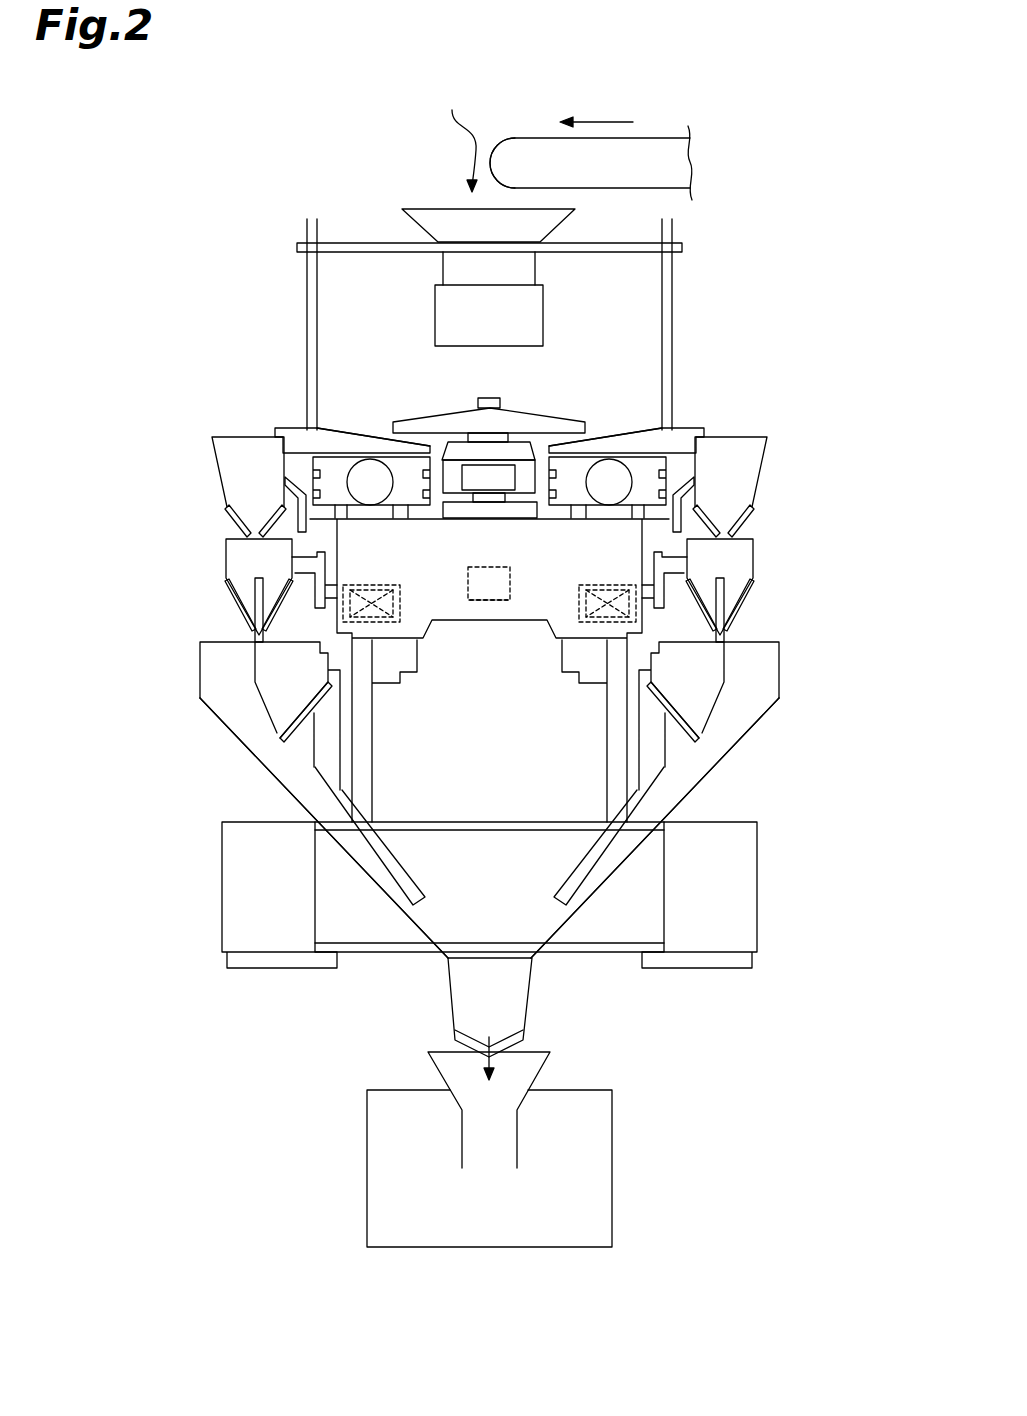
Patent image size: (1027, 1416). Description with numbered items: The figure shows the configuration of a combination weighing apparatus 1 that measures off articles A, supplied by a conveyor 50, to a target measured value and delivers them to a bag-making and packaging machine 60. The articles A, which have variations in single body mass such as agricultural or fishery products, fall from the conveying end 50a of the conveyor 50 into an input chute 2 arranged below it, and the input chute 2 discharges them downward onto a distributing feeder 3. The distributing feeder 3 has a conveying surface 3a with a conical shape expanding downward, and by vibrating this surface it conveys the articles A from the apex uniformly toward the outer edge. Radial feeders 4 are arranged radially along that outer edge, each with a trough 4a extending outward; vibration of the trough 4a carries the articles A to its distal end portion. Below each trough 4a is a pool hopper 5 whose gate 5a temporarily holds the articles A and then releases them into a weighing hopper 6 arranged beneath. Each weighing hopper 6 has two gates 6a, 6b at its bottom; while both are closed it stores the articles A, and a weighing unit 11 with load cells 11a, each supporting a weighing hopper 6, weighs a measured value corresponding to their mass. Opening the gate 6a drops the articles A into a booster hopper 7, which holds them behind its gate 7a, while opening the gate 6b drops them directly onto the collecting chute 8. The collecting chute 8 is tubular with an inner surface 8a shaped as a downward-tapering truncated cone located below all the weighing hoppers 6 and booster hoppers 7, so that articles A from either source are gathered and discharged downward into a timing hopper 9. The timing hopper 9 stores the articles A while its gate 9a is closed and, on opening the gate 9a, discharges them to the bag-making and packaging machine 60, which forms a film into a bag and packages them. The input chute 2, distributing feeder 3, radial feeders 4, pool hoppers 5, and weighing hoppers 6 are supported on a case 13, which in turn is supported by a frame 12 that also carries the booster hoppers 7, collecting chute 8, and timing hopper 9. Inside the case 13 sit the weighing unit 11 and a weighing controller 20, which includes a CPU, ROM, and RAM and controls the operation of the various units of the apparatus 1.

The combination weighing apparatus 1 is at (246, 118).
The input chute 2 is at (434, 214).
The distributing feeder 3 is at (540, 420).
The conveying surface 3a is at (427, 417).
The radial feeder 4 is at (290, 434).
The trough 4a is at (345, 431).
The pool hopper 5 is at (222, 455).
The gate 5a is at (238, 527).
The weighing hopper 6 is at (235, 556).
The gate 6a is at (266, 622).
The gate 6b is at (238, 605).
The booster hopper 7 is at (262, 665).
The gate 7a is at (278, 718).
The collecting chute 8 is at (247, 737).
The inner surface 8a is at (292, 770).
The timing hopper 9 is at (513, 1005).
The gate 9a is at (473, 1043).
The weighing unit 11 is at (400, 588).
The load cell 11a is at (489, 576).
The frame 12 is at (757, 868).
The case 13 is at (498, 608).
The weighing controller 20 is at (483, 604).
The conveyor 50 is at (651, 153).
The conveying end 50a is at (494, 142).
The bag-making and packaging machine 60 is at (598, 1153).
The articles A is at (457, 138).